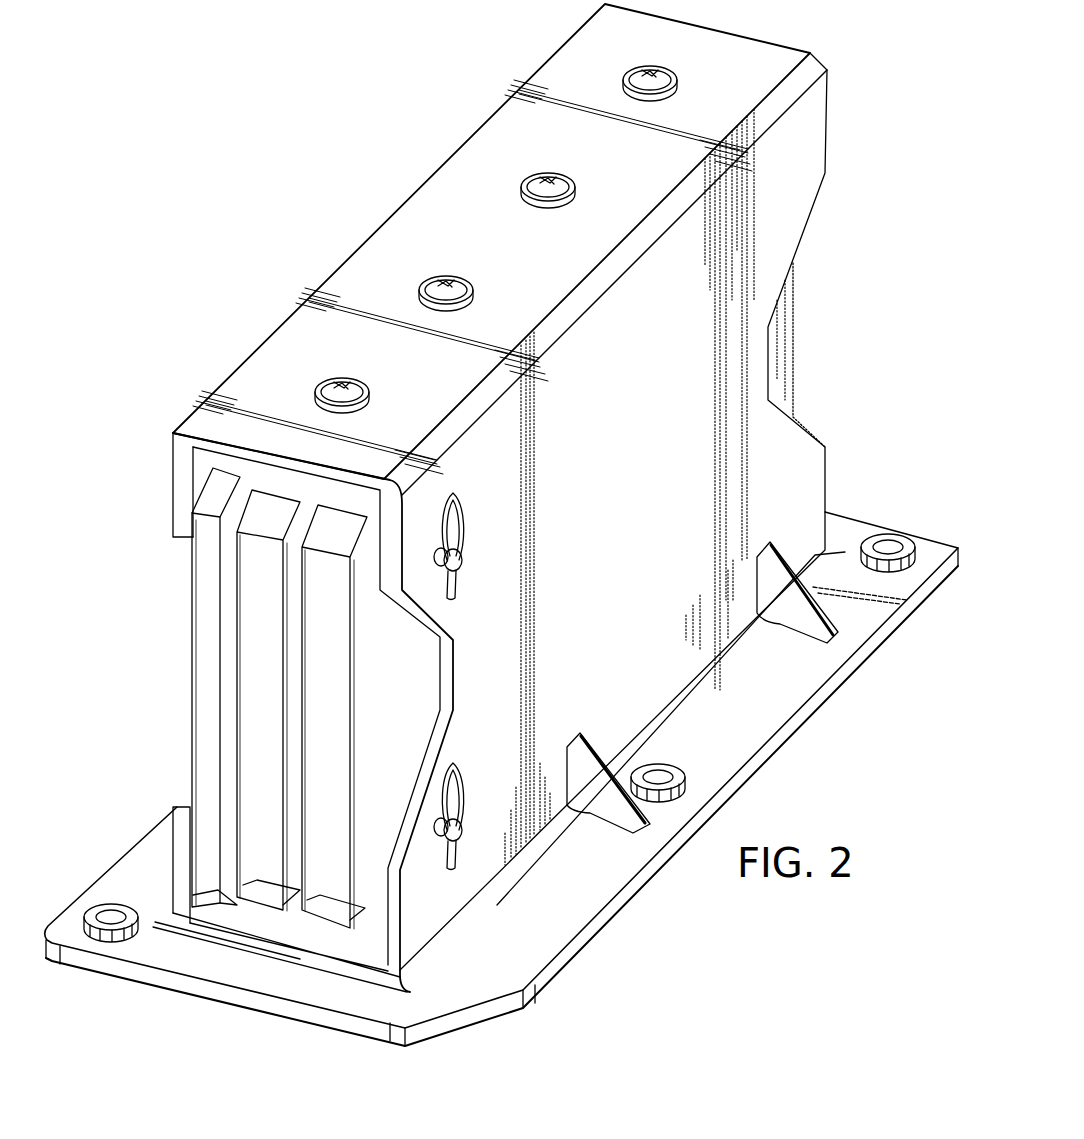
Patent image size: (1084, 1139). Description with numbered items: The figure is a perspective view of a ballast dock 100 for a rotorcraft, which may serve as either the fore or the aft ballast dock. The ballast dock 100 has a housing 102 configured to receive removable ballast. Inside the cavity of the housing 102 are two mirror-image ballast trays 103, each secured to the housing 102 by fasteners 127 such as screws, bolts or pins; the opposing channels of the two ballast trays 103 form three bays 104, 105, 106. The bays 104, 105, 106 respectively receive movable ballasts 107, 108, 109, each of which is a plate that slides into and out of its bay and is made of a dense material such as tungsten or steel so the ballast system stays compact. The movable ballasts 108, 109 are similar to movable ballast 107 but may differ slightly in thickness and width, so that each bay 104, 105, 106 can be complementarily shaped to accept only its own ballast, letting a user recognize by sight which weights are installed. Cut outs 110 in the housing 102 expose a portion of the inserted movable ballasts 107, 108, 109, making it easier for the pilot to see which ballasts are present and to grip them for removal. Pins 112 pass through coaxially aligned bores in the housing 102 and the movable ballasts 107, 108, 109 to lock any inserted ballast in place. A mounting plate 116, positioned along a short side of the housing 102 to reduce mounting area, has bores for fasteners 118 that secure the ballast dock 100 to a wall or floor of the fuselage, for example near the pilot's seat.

The ballast dock 100 is at (332, 66).
The housing 102 is at (550, 66).
The ballast tray 103 is at (357, 503).
The bay 104 is at (234, 468).
The bay 105 is at (280, 912).
The bay 106 is at (343, 937).
The movable ballast 107 is at (207, 651).
The movable ballast 108 is at (245, 660).
The movable ballast 109 is at (310, 745).
The cut out 110 is at (815, 212).
The pin 112 is at (463, 552).
The mounting plate 116 is at (150, 815).
The fastener 118 is at (108, 910).
The fastener 127 is at (645, 70).